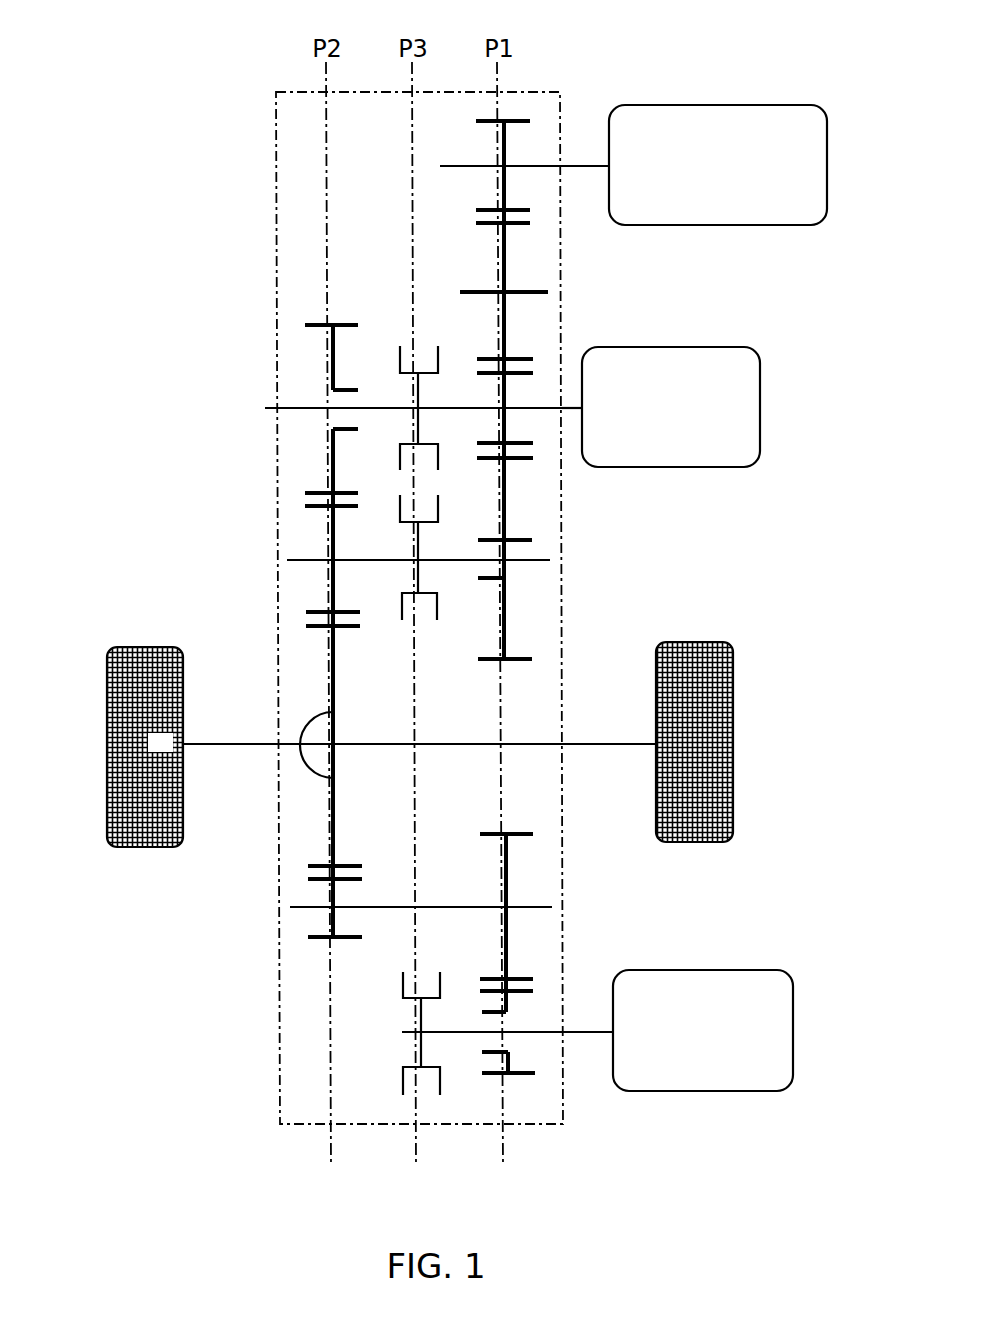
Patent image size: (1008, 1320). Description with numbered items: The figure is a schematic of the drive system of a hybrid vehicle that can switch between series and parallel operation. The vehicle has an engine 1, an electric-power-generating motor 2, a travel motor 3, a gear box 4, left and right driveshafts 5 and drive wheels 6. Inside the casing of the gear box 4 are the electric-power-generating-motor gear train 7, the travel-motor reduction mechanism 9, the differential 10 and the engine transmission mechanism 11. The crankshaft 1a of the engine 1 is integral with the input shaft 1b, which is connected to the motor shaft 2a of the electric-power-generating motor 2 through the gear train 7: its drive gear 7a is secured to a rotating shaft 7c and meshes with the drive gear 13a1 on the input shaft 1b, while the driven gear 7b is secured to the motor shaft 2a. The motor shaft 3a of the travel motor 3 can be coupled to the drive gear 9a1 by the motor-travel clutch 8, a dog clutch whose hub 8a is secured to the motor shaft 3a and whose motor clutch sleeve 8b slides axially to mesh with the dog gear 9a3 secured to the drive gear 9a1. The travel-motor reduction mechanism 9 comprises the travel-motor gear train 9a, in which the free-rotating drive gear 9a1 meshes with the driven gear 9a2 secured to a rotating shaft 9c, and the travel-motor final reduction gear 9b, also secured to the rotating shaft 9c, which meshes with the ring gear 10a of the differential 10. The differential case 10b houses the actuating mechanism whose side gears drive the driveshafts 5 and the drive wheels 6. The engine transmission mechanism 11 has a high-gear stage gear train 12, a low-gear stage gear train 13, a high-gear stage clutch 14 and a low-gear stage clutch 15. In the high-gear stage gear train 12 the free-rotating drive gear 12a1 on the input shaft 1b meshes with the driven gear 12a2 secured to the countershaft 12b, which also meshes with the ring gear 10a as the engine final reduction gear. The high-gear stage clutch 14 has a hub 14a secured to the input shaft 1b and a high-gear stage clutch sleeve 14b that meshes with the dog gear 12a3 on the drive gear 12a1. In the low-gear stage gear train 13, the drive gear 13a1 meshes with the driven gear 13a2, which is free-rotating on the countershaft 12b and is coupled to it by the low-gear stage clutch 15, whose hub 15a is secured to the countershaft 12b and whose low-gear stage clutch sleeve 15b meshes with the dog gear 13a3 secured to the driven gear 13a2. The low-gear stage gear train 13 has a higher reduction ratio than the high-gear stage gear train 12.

The engine 1 is at (722, 347).
The crankshaft 1a is at (566, 410).
The input shaft 1b is at (316, 407).
The electric-power-generating motor 2 is at (756, 105).
The motor shaft 2a is at (579, 166).
The travel motor 3 is at (755, 970).
The motor shaft 3a is at (587, 1033).
The gear box 4 is at (553, 92).
The driveshaft 5 is at (228, 748).
The drive wheels 6 is at (124, 647).
The electric-power-generating-motor gear train 7 is at (542, 216).
The drive gear 7a is at (520, 360).
The driven gear 7b is at (516, 121).
The rotating shaft 7c is at (527, 292).
The motor-travel clutch 8 is at (425, 1112).
The hub 8a is at (415, 1012).
The motor clutch sleeve 8b is at (405, 1083).
The travel-motor reduction mechanism 9 is at (376, 1046).
The travel-motor gear train 9a is at (550, 984).
The drive gear 9a1 is at (520, 1074).
The driven gear 9a2 is at (518, 833).
The dog gear 9a3 is at (485, 1053).
The travel-motor final reduction gear 9b is at (323, 938).
The rotating shaft 9c is at (413, 907).
The differential 10 is at (275, 753).
The ring gear 10a is at (322, 628).
The differential case 10b is at (305, 770).
The engine transmission mechanism 11 is at (296, 358).
The high-gear stage gear train 12 is at (296, 500).
The drive gear 12a1 is at (316, 323).
The driven gear 12a2 is at (318, 611).
The dog gear 12a3 is at (330, 429).
The countershaft 12b is at (316, 557).
The low-gear stage gear train 13 is at (521, 470).
The drive gear 13a1 is at (520, 383).
The driven gear 13a2 is at (518, 657).
The dog gear 13a3 is at (487, 545).
The high-gear stage clutch 14 is at (422, 330).
The hub 14a is at (420, 398).
The high-gear stage clutch sleeve 14b is at (398, 360).
The low-gear stage clutch 15 is at (426, 640).
The hub 15a is at (416, 572).
The low-gear stage clutch sleeve 15b is at (437, 607).